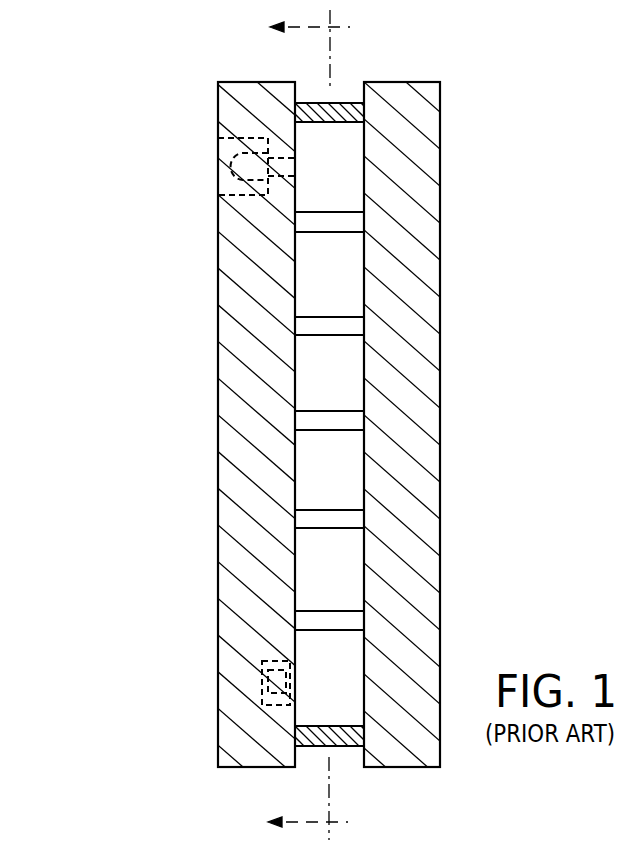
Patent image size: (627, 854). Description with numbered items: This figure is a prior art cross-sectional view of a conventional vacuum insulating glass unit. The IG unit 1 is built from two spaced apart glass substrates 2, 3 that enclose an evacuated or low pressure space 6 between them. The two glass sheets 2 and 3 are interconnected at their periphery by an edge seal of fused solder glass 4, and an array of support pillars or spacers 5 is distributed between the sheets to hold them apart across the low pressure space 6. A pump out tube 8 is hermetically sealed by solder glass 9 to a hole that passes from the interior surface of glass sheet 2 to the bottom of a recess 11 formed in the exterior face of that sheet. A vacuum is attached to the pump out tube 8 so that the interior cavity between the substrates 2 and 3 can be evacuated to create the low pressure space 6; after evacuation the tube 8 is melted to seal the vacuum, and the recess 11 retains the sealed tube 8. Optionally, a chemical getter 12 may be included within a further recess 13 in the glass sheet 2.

The vacuum IG unit 1 is at (349, 431).
The glass substrate 2 is at (218, 476).
The glass substrate 3 is at (410, 348).
The edge seal of fused solder glass 4 is at (347, 110).
The support pillars 5 is at (333, 423).
The low pressure space 6 is at (313, 555).
The pump out tube 8 is at (233, 168).
The solder glass 9 is at (262, 150).
The recess 11 is at (237, 197).
The chemical getter 12 is at (287, 695).
The recess 13 is at (268, 708).